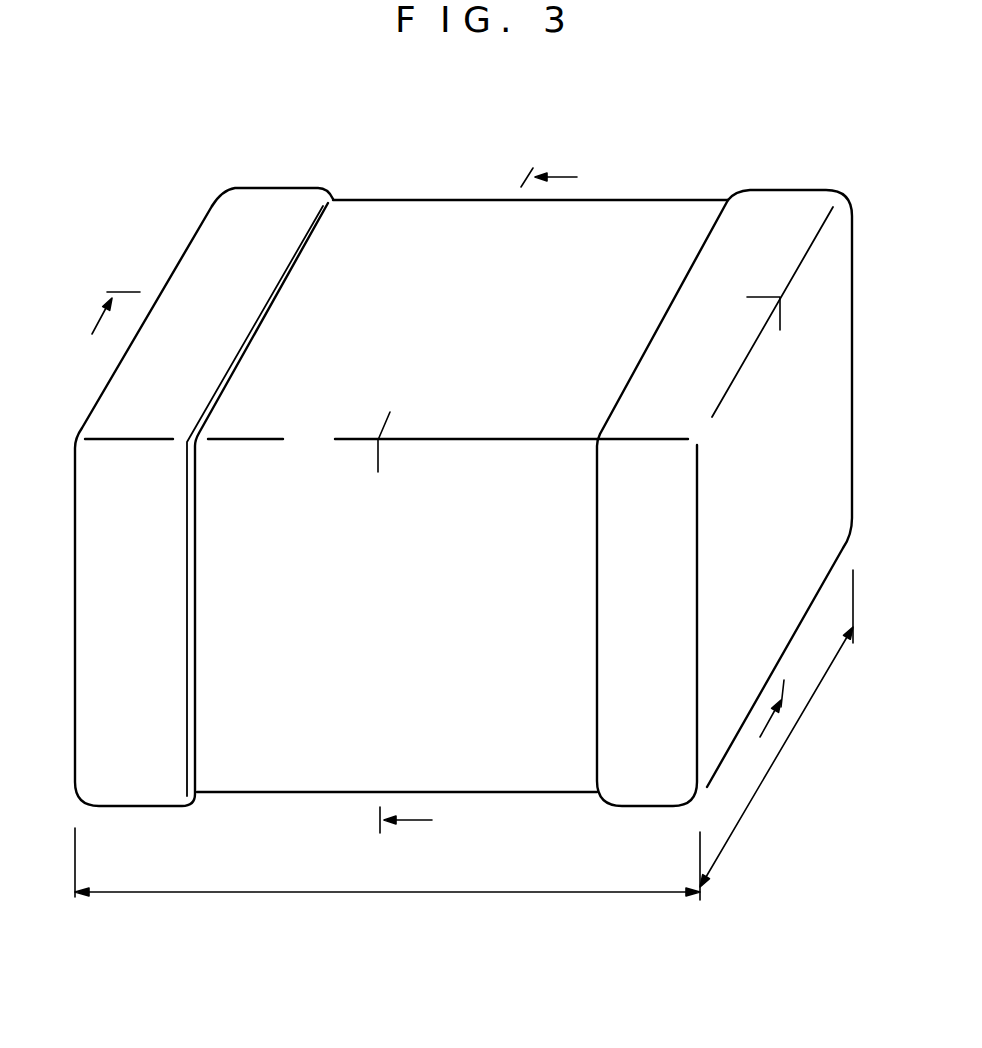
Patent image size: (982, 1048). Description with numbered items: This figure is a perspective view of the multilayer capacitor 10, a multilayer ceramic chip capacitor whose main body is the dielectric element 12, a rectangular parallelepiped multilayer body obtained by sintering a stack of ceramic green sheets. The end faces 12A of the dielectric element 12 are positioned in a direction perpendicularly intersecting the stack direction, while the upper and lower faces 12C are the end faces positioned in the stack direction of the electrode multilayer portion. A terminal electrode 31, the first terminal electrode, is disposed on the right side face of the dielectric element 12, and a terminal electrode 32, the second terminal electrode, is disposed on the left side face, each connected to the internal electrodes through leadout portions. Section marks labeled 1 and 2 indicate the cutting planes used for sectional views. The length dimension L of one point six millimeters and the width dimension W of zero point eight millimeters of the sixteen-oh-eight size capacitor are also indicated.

The multilayer capacitor 10 is at (731, 126).
The dielectric element 12 is at (580, 228).
The end faces 12A is at (436, 200).
The upper and lower faces 12C is at (653, 225).
The terminal electrode 31 is at (782, 204).
The terminal electrode 32 is at (262, 200).
The section line 1- 1 is at (487, 497).
The section line 2- 2 is at (432, 529).